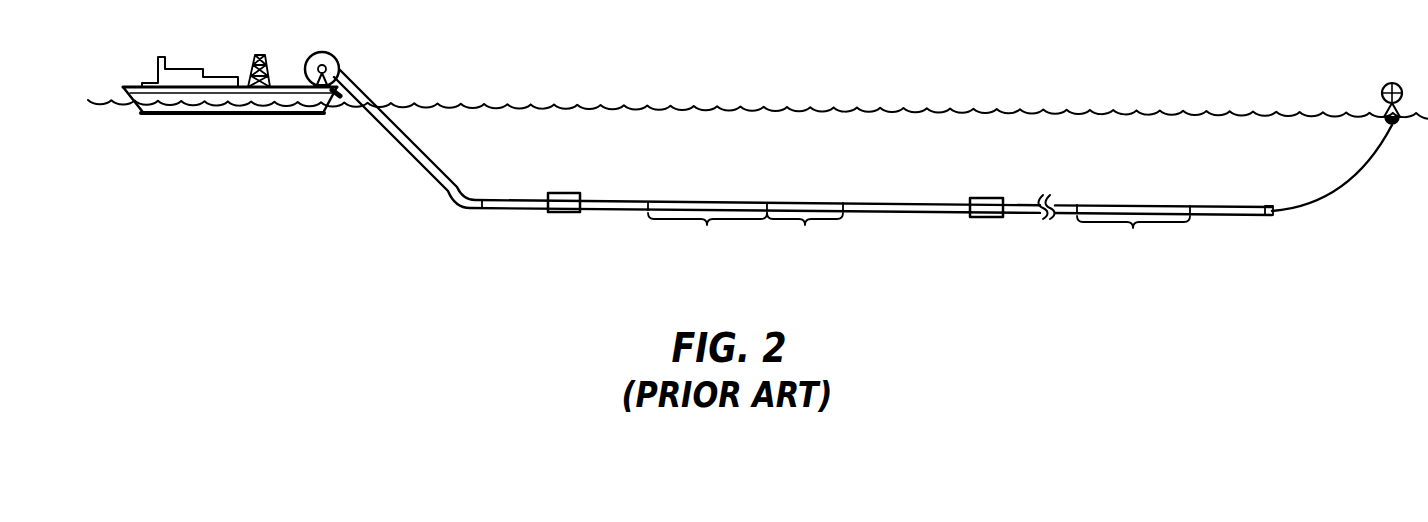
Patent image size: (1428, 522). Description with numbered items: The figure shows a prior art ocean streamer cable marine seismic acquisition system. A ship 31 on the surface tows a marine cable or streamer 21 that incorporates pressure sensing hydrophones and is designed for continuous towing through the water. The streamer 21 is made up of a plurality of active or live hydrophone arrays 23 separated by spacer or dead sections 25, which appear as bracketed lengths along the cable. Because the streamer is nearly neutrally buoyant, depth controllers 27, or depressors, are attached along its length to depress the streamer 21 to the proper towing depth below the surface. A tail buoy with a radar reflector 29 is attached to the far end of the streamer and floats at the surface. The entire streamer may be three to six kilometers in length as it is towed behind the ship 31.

The marine streamer 21 is at (427, 171).
The active hydrophone array 23 is at (919, 238).
The spacer section 25 is at (563, 213).
The depth controller 27 is at (985, 218).
The tail buoy with radar reflector 29 is at (1385, 86).
The ship 31 is at (132, 85).